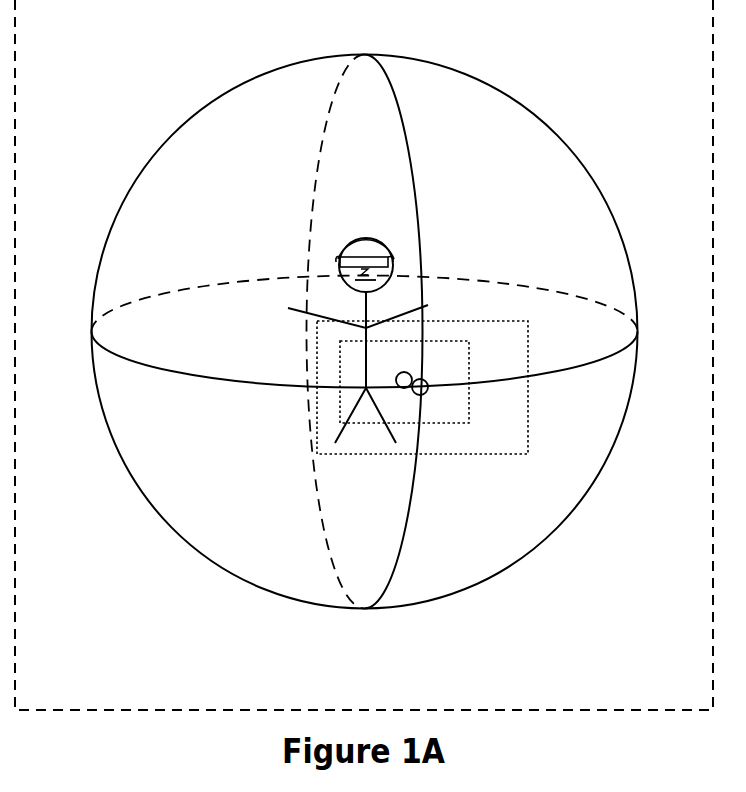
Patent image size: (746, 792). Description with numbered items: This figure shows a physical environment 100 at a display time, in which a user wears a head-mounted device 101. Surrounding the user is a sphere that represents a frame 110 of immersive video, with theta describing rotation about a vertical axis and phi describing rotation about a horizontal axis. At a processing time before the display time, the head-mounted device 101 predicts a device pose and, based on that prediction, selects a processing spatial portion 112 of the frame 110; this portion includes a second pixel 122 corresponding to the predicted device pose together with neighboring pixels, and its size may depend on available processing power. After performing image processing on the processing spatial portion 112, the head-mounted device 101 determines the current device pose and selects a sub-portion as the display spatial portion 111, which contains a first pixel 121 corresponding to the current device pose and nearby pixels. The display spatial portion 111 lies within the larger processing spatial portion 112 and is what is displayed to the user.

The physical environment 100 is at (65, 15).
The frame 110 is at (550, 128).
The head-mounted device 101 is at (349, 256).
The processing spatial portion 112 is at (528, 346).
The display spatial portion 111 is at (469, 370).
The first pixel 121 is at (410, 372).
The second pixel 122 is at (426, 393).